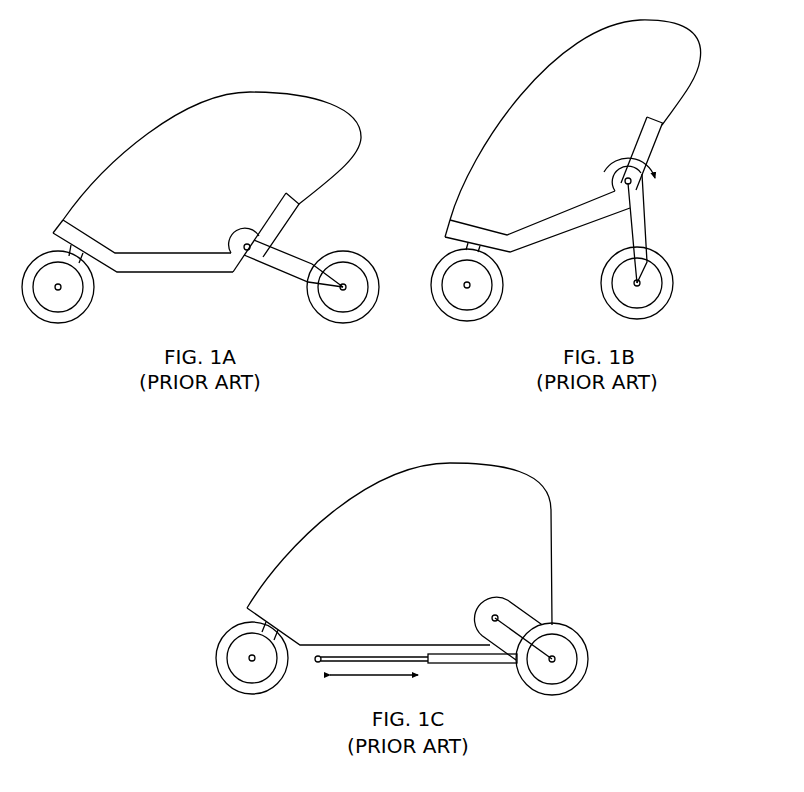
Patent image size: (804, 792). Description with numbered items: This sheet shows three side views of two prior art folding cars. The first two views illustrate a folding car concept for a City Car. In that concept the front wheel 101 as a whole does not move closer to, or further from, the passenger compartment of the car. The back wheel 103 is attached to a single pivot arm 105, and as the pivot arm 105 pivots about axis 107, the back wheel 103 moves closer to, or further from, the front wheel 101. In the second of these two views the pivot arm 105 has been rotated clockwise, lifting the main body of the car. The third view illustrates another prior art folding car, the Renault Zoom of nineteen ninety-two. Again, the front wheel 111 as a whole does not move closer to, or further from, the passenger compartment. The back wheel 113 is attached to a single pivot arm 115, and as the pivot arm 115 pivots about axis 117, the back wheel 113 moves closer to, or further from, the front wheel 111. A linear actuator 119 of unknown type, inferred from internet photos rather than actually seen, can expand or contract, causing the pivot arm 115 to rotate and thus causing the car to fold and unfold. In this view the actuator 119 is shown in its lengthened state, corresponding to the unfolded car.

In FIG. 1A, the front wheel 101 is at (58, 287).
In FIG. 1B, the front wheel 101 is at (467, 285).
In FIG. 1A, the back wheel 103 is at (343, 287).
In FIG. 1B, the back wheel 103 is at (637, 283).
In FIG. 1A, the pivot arm 105 is at (286, 253).
In FIG. 1B, the pivot arm 105 is at (630, 226).
In FIG. 1A, the axis 107 is at (244, 245).
In FIG. 1B, the axis 107 is at (626, 181).
In FIG. 1C, the front wheel 111 is at (252, 658).
In FIG. 1C, the back wheel 113 is at (552, 659).
In FIG. 1C, the pivot arm 115 is at (520, 617).
In FIG. 1C, the axis 117 is at (478, 608).
In FIG. 1C, the linear actuator 119 is at (468, 660).